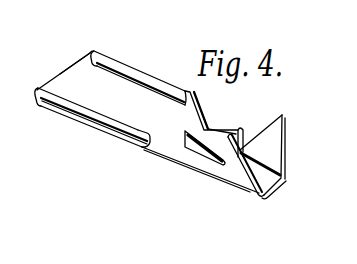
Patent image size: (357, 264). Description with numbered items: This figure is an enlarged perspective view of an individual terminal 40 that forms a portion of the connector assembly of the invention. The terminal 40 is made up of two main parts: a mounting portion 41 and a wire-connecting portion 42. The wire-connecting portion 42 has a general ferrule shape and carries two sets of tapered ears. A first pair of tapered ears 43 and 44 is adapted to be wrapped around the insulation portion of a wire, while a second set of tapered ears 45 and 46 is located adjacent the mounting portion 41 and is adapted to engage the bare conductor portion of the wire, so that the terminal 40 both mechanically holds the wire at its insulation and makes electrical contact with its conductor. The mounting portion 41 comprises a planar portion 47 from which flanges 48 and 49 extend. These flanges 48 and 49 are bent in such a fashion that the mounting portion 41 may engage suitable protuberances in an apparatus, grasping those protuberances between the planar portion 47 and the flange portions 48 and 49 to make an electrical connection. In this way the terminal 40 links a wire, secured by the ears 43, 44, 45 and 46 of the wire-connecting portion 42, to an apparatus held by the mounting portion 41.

The terminal 40 is at (279, 184).
The mounting portion 41 is at (93, 126).
The wire-connecting portion 42 is at (247, 186).
The tapered ear 43 is at (287, 118).
The tapered ear 44 is at (237, 154).
The tapered ear 45 is at (251, 138).
The tapered ear 46 is at (193, 149).
The planar portion 47 is at (103, 91).
The flange 48 is at (123, 123).
The flange 49 is at (138, 87).